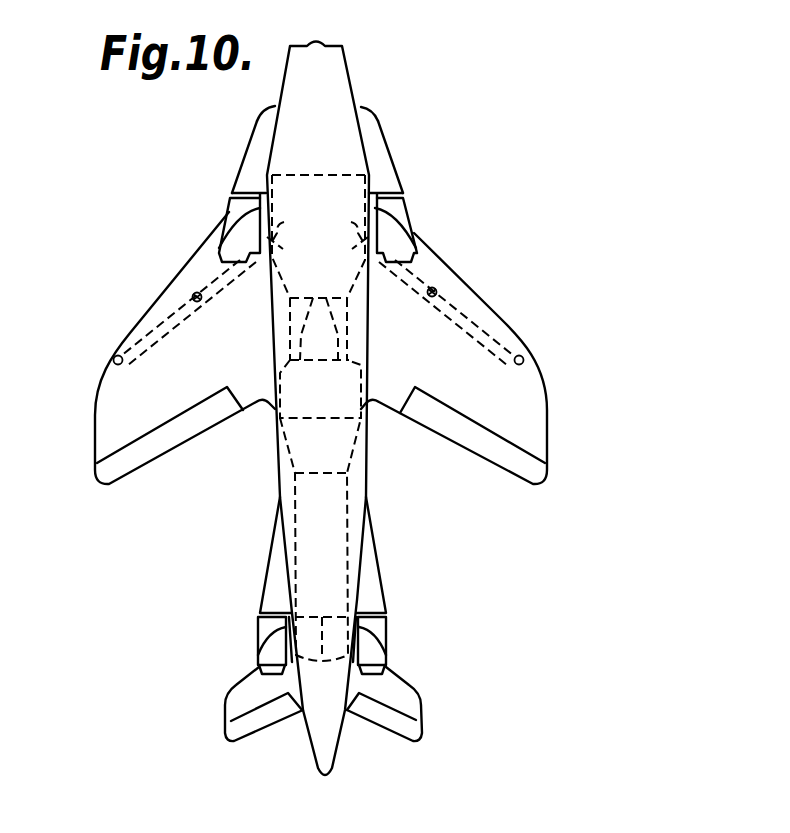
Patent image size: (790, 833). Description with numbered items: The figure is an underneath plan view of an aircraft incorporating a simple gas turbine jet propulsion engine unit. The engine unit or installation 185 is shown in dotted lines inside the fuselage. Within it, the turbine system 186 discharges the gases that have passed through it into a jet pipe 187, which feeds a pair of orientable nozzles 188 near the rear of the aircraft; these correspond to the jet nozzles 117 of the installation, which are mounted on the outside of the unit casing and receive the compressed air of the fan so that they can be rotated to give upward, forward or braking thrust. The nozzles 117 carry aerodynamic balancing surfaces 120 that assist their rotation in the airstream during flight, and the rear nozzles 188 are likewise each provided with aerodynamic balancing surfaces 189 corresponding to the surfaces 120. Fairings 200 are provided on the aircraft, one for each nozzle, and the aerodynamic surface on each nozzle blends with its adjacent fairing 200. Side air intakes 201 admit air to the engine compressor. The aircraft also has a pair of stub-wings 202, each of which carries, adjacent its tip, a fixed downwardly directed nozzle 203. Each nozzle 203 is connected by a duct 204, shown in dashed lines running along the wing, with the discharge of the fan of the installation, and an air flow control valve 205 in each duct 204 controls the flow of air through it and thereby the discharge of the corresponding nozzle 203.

The jet nozzle 117 is at (237, 240).
The aerodynamic balancing surface 120 is at (237, 213).
The engine unit 185 is at (357, 346).
The turbine system 186 is at (340, 443).
The jet pipe 187 is at (327, 559).
The orientable nozzle 188 is at (270, 650).
The aerodynamic balancing surface 189 is at (272, 623).
The fairing 200 is at (248, 172).
The side air intake 201 is at (262, 113).
The stub-wing 202 is at (117, 400).
The fixed downwardly directed nozzle 203 is at (115, 356).
The duct 204 is at (170, 318).
The air flow control valve 205 is at (194, 295).